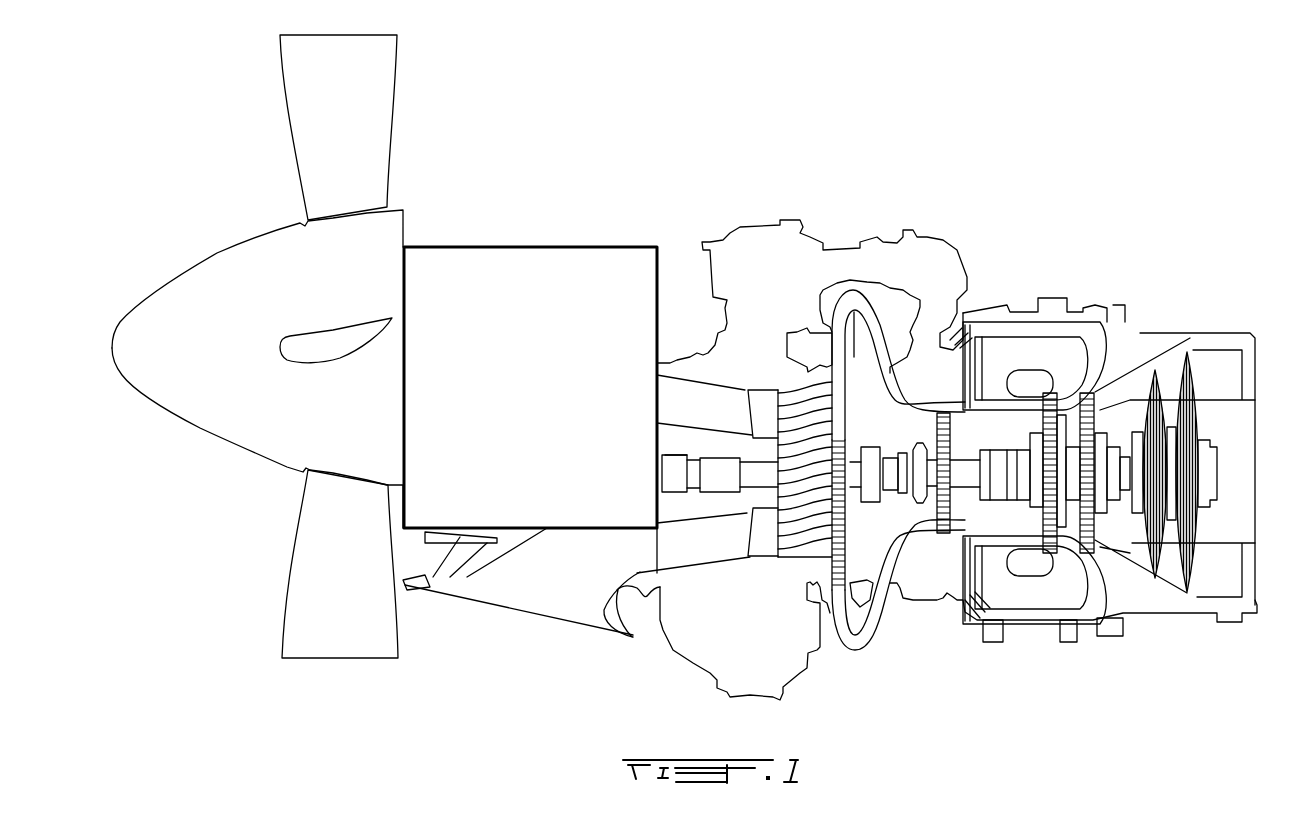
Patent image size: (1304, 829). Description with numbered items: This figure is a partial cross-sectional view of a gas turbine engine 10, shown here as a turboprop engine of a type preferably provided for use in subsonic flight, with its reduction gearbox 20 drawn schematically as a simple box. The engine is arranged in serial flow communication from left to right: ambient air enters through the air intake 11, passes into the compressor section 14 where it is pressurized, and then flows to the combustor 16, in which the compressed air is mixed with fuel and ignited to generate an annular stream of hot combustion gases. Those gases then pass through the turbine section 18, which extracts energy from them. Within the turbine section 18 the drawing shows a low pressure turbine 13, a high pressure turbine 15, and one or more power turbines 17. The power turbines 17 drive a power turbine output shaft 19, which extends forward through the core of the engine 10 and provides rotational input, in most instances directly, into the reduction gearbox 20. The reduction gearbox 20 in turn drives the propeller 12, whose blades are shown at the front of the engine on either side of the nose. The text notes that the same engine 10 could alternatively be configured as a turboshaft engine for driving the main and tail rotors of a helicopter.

The gas turbine engine 10 is at (797, 145).
The air intake 11 is at (637, 550).
The propeller 12 is at (345, 100).
The low pressure turbine 13 is at (1090, 393).
The compressor section 14 is at (835, 342).
The high pressure turbine 15 is at (1048, 392).
The combustor 16 is at (1023, 353).
The power turbine 17 is at (1187, 350).
The turbine section 18 is at (1118, 530).
The power turbine output shaft 19 is at (713, 480).
The reduction gearbox 20 is at (533, 246).